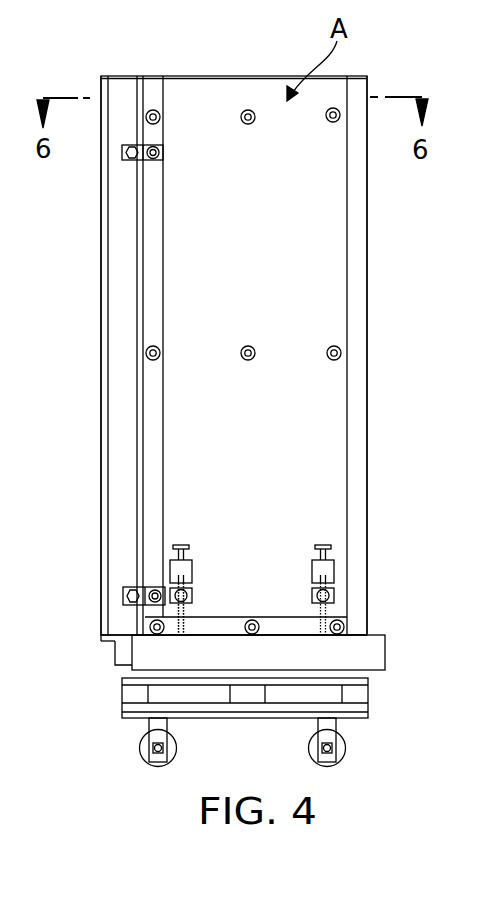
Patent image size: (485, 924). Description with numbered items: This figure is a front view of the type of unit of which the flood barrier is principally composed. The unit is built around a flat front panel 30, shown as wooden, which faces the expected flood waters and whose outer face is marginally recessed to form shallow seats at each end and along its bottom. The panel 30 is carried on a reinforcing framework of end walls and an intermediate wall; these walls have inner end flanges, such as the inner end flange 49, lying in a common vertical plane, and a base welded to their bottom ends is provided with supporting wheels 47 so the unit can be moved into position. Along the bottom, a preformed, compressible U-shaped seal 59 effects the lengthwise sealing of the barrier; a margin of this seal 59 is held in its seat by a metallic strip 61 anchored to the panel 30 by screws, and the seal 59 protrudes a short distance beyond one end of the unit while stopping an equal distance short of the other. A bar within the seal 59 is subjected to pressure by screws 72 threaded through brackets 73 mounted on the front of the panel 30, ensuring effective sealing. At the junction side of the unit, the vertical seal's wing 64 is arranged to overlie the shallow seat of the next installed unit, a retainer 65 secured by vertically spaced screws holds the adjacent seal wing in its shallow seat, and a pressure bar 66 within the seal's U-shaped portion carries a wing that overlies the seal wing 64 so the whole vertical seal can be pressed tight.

The front panel 30 is at (330, 183).
The supporting wheels 47 is at (177, 747).
The inner end flange 49 is at (355, 470).
The U-shaped seal 59 is at (139, 658).
The metallic strip 61 is at (282, 628).
The wing 64 is at (101, 212).
The retainer 65 is at (163, 153).
The pressure bar 66 is at (115, 462).
The screws 72 is at (190, 612).
The brackets 73 is at (190, 565).